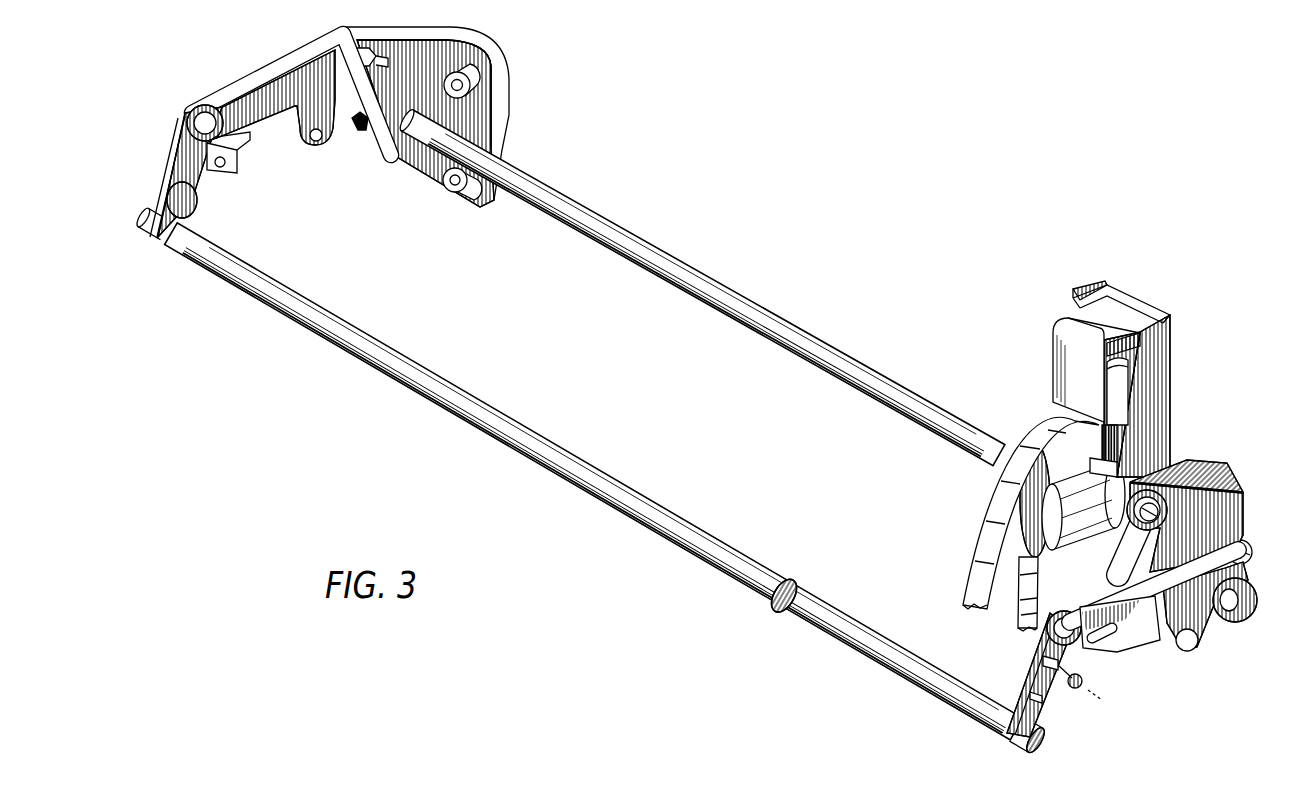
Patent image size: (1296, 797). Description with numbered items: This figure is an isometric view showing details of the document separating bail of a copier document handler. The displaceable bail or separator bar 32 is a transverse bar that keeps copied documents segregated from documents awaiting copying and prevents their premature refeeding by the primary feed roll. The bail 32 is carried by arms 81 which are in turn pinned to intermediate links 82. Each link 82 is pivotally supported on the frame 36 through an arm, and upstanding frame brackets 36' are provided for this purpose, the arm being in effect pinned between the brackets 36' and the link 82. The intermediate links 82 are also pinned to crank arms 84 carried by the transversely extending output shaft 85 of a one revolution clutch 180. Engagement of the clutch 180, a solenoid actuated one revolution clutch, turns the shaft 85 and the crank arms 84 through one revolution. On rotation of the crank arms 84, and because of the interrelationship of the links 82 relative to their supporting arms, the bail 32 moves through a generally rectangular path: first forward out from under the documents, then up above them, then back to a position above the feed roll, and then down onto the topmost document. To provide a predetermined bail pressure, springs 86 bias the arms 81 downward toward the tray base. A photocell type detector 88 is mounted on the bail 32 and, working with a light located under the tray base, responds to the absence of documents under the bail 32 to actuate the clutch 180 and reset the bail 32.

The bail 32 is at (539, 440).
The frame 36 is at (447, 117).
The frame brackets 36' is at (1197, 550).
The arms 81 is at (172, 171).
The intermediate links 82 is at (1115, 650).
The crank arms 84 is at (365, 132).
The output shaft 85 is at (774, 320).
The springs 86 is at (1080, 692).
The photocell type detector 88 is at (770, 605).
The one revolution clutch 180 is at (1030, 530).